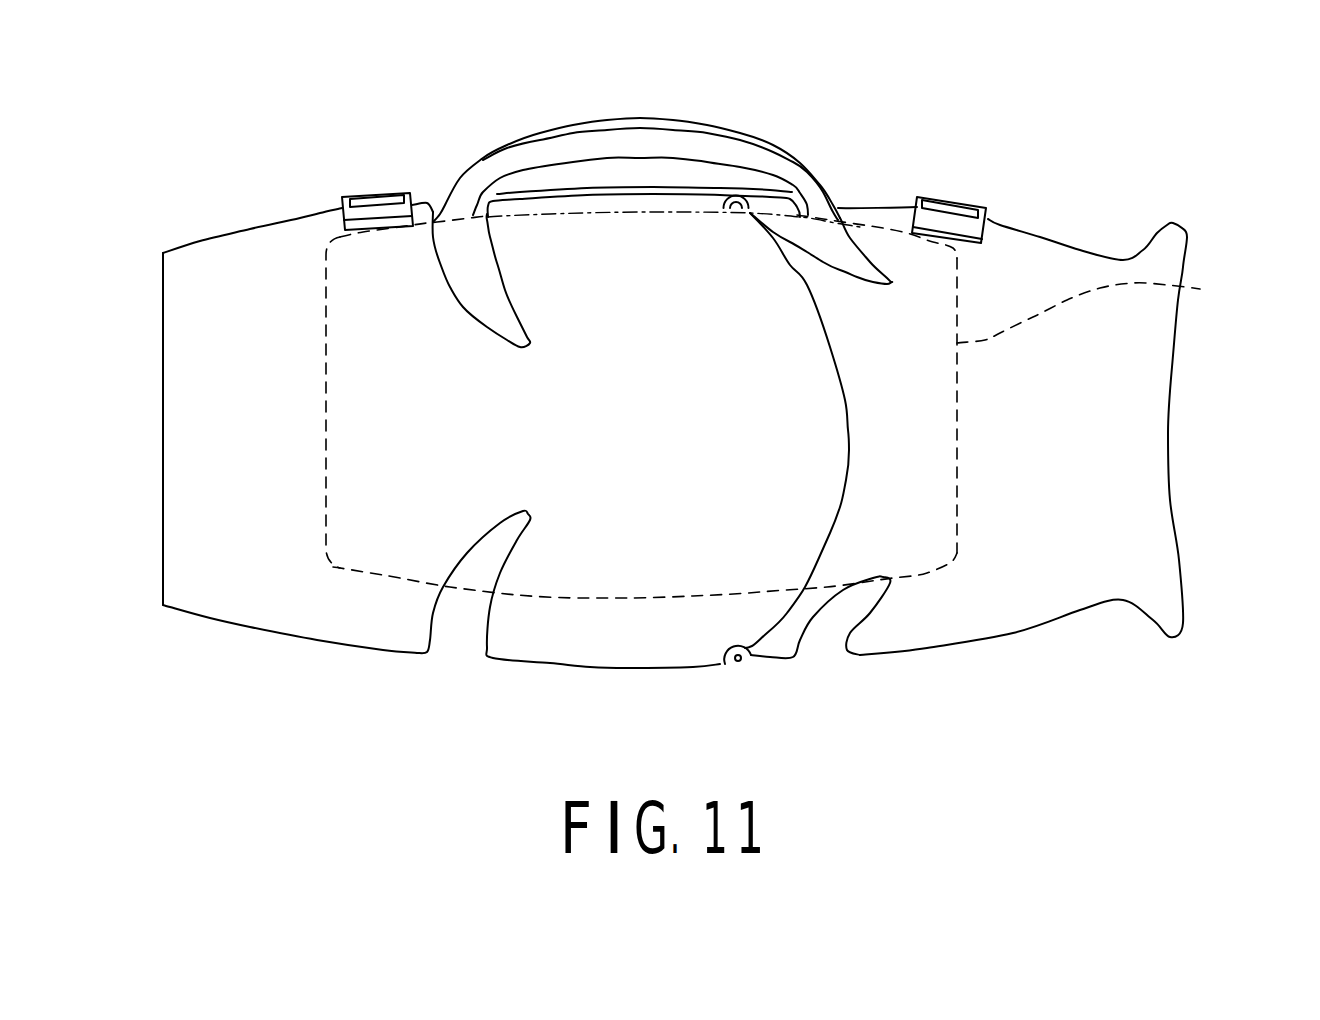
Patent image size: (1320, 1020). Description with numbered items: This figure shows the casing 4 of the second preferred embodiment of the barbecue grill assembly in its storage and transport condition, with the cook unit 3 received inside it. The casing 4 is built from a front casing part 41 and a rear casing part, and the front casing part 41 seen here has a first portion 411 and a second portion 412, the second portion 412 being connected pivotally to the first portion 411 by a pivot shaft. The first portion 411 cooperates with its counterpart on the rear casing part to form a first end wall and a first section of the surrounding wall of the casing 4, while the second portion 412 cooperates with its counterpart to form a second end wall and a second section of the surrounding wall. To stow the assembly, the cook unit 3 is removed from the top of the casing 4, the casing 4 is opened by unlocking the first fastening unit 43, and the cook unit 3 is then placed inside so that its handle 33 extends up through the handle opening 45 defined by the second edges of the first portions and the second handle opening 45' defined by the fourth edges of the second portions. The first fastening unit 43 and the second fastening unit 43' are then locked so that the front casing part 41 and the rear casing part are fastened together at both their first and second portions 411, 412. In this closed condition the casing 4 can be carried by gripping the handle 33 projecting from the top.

The cook unit 3 is at (1195, 288).
The casing 4 is at (1207, 425).
The front casing part 41 is at (633, 679).
The first portion 411 is at (335, 627).
The second portion 412 is at (1018, 600).
The first fastening unit 43 is at (333, 176).
The second fastening unit 43' is at (1012, 187).
The handle 33 is at (823, 180).
The handle opening 45 is at (476, 207).
The second handle opening 45' is at (866, 202).